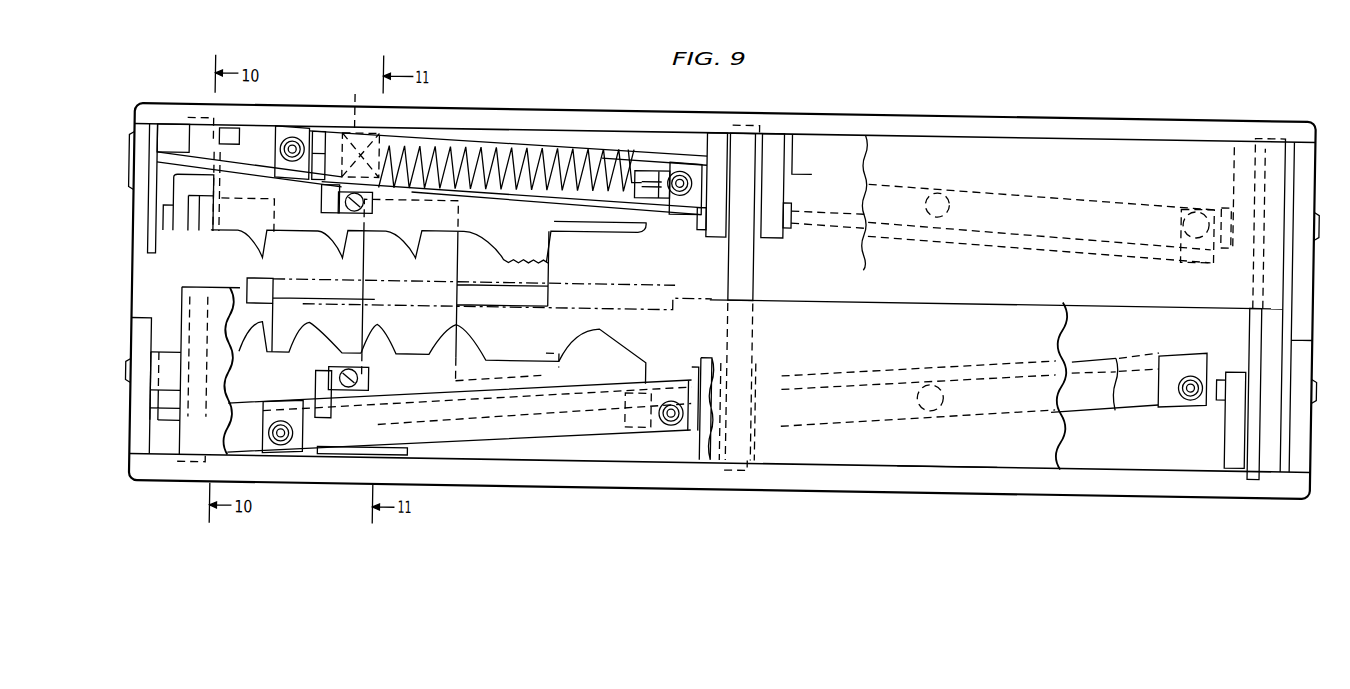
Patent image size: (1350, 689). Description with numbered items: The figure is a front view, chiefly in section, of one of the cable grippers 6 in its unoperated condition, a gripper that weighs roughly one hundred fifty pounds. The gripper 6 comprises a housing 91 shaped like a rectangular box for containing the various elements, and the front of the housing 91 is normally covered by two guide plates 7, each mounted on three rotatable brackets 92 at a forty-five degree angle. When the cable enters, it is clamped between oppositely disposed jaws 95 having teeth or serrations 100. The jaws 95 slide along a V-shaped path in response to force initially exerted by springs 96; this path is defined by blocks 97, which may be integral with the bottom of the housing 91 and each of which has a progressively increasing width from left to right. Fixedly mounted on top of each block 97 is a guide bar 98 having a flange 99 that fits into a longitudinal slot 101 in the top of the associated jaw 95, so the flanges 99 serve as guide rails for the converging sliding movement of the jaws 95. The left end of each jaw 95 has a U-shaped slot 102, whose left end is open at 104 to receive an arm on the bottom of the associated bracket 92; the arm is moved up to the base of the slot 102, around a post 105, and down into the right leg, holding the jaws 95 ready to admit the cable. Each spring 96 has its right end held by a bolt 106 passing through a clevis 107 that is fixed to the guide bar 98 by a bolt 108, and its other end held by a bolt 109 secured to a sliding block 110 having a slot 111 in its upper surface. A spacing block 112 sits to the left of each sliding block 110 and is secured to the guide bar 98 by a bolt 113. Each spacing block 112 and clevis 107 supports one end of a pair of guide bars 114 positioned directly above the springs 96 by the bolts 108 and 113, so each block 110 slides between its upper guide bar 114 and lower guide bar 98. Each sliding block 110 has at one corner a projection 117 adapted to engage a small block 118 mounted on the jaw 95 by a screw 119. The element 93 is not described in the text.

The cable gripper 6 is at (848, 528).
The guide plate 7 is at (909, 153).
The housing 91 is at (955, 478).
The rotatable bracket 92 is at (198, 126).
The latch 93 is at (130, 140).
The jaw 95 is at (512, 215).
The spring 96 is at (553, 162).
The block 97 is at (167, 140).
The guide bar 98 is at (1048, 210).
The flange 99 is at (993, 228).
The serrations 100 is at (308, 329).
The longitudinal slot 101 is at (175, 430).
The U-shaped slot 102 is at (188, 185).
The open end of slot 104 is at (172, 228).
The post 105 is at (193, 233).
The bolt 106 is at (632, 168).
The clevis 107 is at (652, 162).
The bolt 108 is at (678, 172).
The bolt 109 is at (361, 127).
The sliding block 110 is at (407, 150).
The slot 111 is at (445, 165).
The spacing block 112 is at (317, 138).
The bolt 113 is at (290, 143).
The guide bar 114 is at (276, 133).
The projection 117 is at (329, 190).
The small block 118 is at (366, 198).
The screw 119 is at (350, 396).